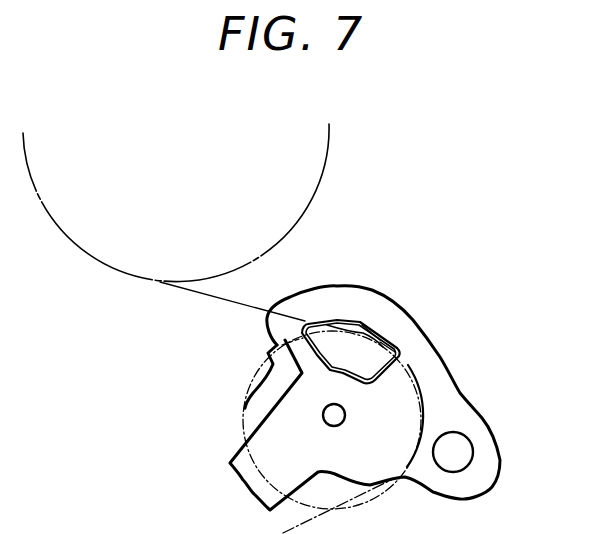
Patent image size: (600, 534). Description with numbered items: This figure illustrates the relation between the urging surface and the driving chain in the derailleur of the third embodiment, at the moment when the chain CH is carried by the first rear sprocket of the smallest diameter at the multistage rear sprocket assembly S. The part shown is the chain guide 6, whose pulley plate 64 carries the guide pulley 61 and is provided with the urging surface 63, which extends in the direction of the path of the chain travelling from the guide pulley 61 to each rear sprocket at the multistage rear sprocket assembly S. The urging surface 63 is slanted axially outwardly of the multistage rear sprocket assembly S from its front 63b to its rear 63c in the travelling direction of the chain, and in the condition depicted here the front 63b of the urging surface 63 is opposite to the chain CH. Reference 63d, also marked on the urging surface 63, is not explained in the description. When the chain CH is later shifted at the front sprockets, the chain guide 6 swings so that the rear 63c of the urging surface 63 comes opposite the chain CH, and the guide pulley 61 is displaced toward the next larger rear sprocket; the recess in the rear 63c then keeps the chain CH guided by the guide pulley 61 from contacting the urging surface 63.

The multistage rear sprocket assembly S is at (328, 168).
The chain CH is at (217, 299).
The chain guide 6 is at (483, 403).
The guide pulley 61 is at (272, 363).
The urging surface 63 is at (352, 305).
The front of urging surface 63b is at (289, 307).
The rear of urging surface 63c is at (383, 322).
The cam surface 63d is at (368, 313).
The pulley plate 64 is at (440, 368).